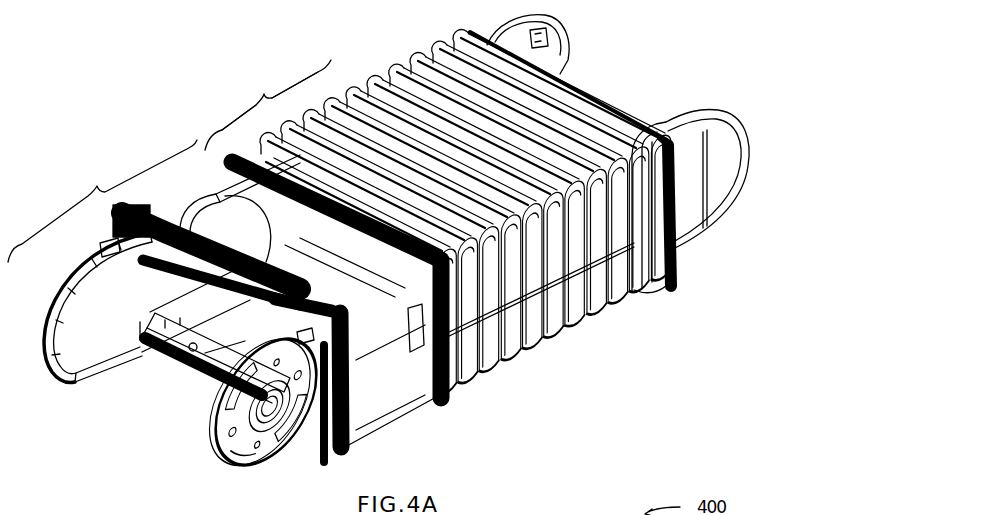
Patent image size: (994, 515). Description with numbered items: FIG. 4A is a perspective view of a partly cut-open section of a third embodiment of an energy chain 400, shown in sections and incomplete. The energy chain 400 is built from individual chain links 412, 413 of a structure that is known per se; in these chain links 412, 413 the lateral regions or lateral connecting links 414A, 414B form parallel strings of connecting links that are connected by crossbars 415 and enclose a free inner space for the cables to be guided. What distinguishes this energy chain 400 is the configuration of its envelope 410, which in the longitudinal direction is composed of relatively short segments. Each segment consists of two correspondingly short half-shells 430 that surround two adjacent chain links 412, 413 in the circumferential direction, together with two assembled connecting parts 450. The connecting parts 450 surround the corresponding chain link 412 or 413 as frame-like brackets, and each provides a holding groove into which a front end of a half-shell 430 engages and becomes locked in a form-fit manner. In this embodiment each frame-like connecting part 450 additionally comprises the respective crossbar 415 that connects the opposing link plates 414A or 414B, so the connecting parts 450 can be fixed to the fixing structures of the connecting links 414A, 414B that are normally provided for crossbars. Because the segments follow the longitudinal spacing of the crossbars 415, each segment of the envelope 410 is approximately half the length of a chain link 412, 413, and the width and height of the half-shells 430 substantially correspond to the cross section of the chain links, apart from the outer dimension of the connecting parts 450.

The energy chain 400 is at (192, 102).
The envelope 410 is at (612, 85).
The chain link 412 is at (409, 231).
The chain link 413 is at (270, 101).
The lateral connecting link 414A is at (213, 190).
The lateral connecting link 414B is at (70, 352).
The crossbar 415 is at (167, 360).
The half-shell 430 is at (420, 50).
The connecting part 450 is at (383, 388).